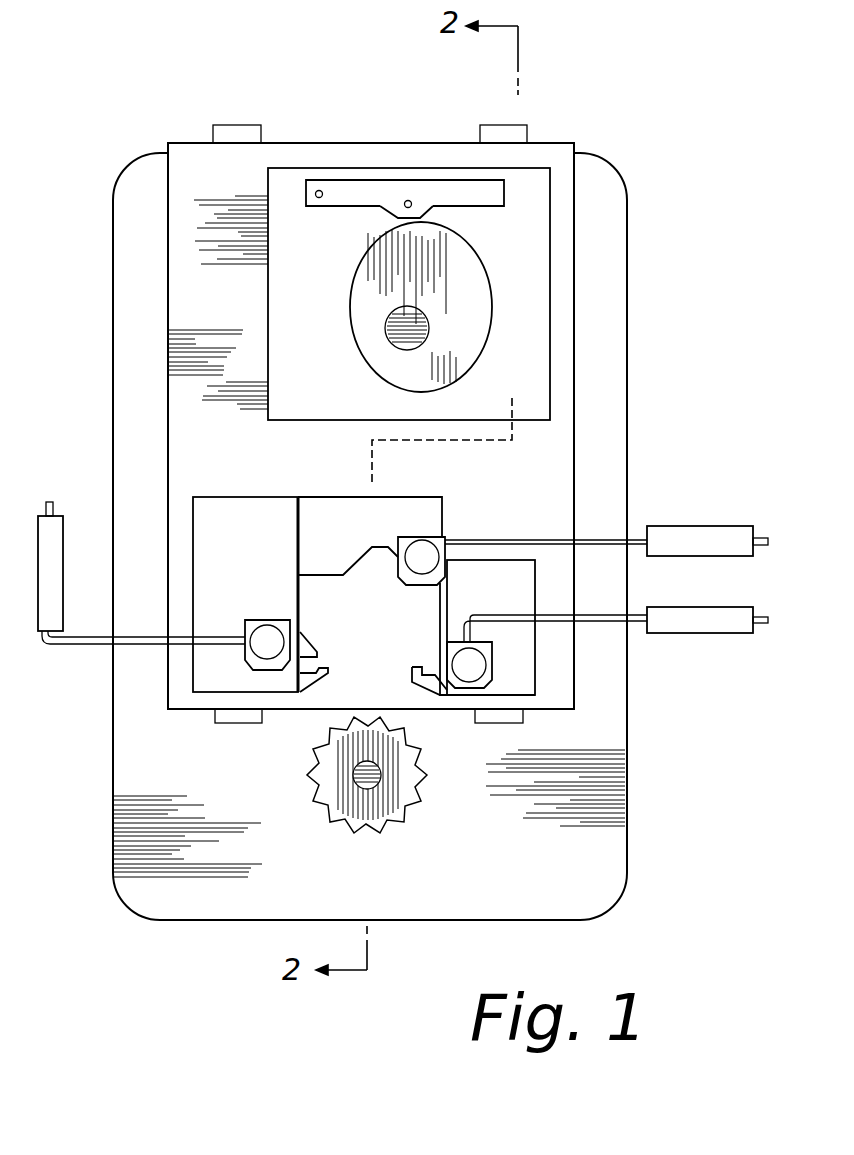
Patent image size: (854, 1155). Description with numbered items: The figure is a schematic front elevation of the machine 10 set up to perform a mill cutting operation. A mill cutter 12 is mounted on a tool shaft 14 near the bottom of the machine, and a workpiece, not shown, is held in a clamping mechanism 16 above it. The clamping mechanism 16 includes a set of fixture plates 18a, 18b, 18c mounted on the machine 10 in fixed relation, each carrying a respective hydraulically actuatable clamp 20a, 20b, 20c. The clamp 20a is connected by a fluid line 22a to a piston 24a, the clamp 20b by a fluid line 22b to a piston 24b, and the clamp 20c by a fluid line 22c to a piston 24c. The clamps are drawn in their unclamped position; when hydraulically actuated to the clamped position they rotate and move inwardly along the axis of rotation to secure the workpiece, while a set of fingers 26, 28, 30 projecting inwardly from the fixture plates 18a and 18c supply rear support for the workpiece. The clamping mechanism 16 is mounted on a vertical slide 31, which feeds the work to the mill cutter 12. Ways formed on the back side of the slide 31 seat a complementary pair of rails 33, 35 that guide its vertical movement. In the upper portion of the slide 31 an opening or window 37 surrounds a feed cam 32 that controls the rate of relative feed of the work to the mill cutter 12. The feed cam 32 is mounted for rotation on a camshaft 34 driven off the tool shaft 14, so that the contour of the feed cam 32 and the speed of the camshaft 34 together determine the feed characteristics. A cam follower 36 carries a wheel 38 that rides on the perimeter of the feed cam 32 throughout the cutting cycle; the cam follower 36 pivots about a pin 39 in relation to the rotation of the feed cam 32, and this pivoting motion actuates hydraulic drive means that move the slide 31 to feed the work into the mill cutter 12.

The machine 10 is at (638, 201).
The mill cutter 12 is at (313, 773).
The tool shaft 14 is at (360, 786).
The clamping mechanism 16 is at (333, 492).
The fixture plate 18a is at (226, 503).
The fixture plate 18b is at (438, 508).
The fixture plate 18c is at (533, 583).
The clamp 20a is at (252, 620).
The clamp 20b is at (405, 540).
The clamp 20c is at (490, 678).
The fluid line 22a is at (125, 645).
The fluid line 22b is at (492, 540).
The fluid line 22c is at (603, 621).
The piston 24a is at (56, 523).
The piston 24b is at (685, 532).
The piston 24c is at (703, 623).
The finger 26 is at (303, 633).
The finger 28 is at (323, 672).
The finger 30 is at (413, 667).
The vertical slide 31 is at (173, 243).
The feed cam 32 is at (483, 312).
The rail 33 is at (255, 125).
The camshaft 34 is at (429, 335).
The rail 35 is at (492, 125).
The cam follower 36 is at (497, 192).
The window 37 is at (268, 308).
The wheel 38 is at (410, 220).
The pin 39 is at (319, 198).